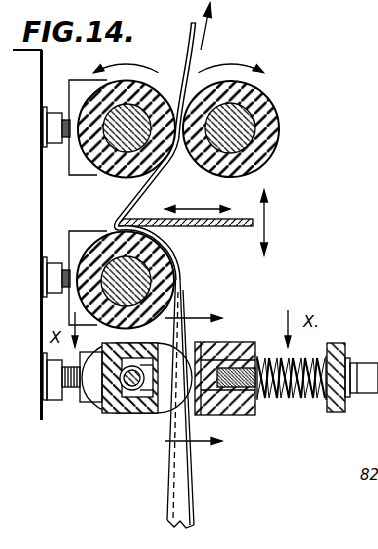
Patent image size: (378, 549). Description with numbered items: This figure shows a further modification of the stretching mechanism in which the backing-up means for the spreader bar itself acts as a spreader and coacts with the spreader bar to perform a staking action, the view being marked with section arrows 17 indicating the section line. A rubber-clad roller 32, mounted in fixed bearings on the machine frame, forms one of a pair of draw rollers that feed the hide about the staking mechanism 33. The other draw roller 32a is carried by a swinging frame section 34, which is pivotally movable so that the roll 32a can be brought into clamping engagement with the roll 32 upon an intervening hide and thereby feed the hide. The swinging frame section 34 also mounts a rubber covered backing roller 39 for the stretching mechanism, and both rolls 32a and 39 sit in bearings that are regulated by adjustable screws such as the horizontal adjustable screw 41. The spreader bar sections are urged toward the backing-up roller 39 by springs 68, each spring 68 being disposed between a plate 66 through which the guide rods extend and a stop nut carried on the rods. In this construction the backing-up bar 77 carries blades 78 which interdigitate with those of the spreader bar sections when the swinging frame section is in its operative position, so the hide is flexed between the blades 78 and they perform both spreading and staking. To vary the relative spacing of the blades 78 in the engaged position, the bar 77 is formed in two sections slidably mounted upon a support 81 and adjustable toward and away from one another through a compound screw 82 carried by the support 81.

The section line 17- 17 is at (207, 381).
The rubber-clad roller 32 is at (267, 101).
The draw roller 32a is at (183, 60).
The staking mechanism 33 is at (239, 227).
The swinging frame section 34 is at (44, 197).
The backing roller 39 is at (158, 274).
The adjustable screw 41 is at (67, 117).
The plate 66 is at (342, 343).
The spring 68 is at (295, 400).
The backing-up bar 77 is at (163, 382).
The blades 78 is at (175, 410).
The support 81 is at (118, 405).
The compound screw 82 is at (100, 398).